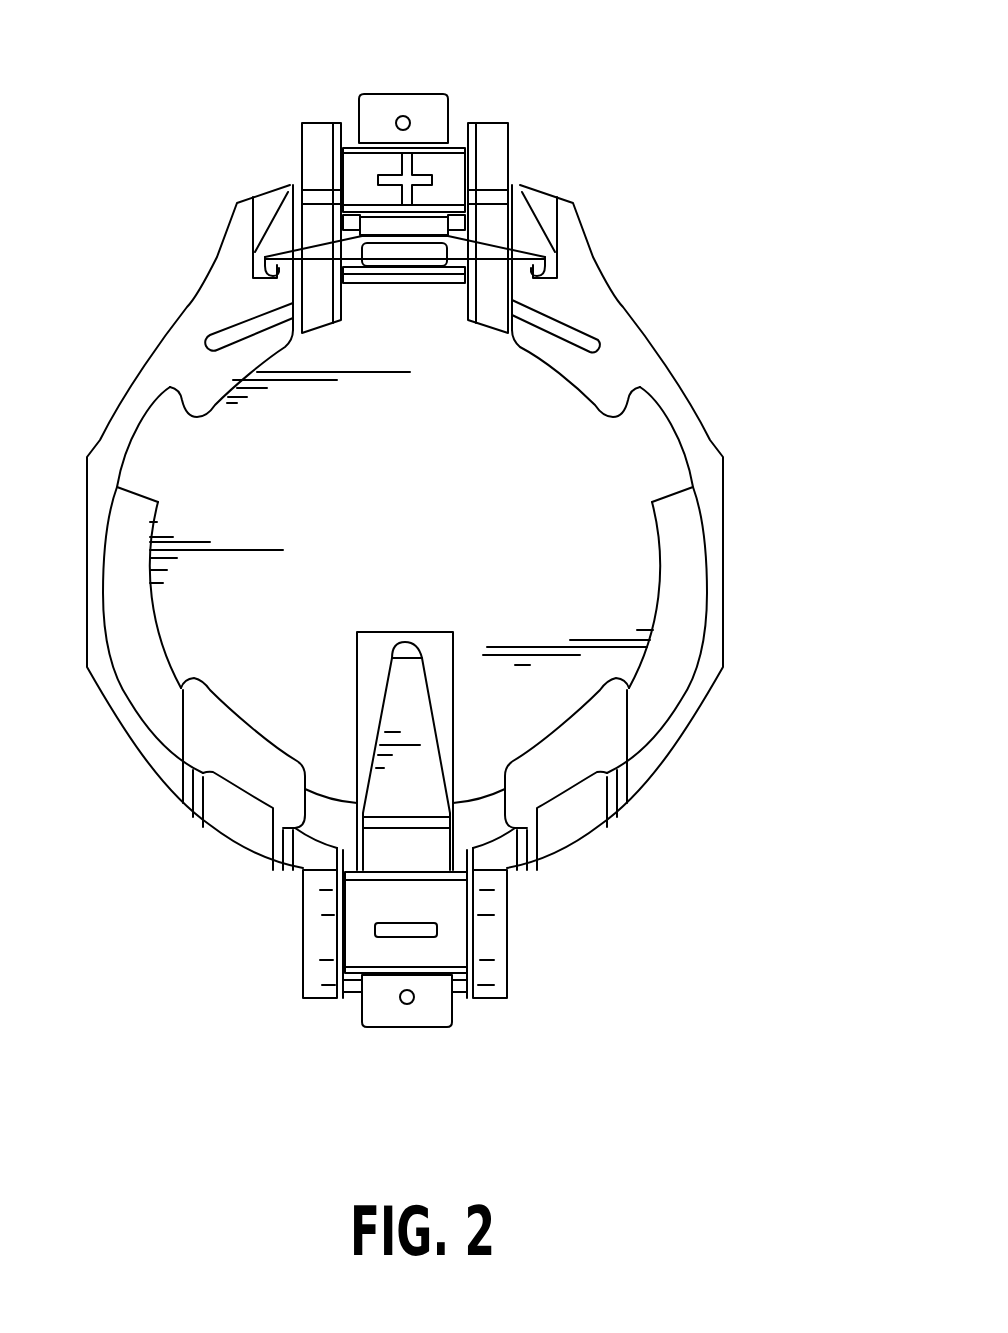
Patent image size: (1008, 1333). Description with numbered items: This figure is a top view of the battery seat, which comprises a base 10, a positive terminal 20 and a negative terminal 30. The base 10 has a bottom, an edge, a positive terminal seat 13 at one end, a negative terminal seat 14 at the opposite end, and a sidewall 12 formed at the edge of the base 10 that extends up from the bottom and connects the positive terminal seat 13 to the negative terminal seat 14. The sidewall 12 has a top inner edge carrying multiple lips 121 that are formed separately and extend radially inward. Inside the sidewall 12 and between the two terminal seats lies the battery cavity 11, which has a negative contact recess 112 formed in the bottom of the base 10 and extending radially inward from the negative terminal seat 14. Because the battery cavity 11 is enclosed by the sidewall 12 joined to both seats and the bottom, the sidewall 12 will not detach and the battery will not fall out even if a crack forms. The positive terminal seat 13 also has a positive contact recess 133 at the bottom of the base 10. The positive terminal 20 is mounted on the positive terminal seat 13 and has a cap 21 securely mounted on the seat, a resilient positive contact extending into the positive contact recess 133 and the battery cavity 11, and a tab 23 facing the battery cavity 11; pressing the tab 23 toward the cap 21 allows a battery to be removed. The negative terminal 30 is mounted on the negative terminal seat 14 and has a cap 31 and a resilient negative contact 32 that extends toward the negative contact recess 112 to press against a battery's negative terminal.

The base 10 is at (478, 552).
The battery cavity 11 is at (597, 465).
The sidewall 12 is at (452, 527).
The negative contact recess 112 is at (433, 643).
The lips 121 is at (567, 322).
The positive terminal seat 13 is at (495, 140).
The positive contact recess 133 is at (405, 266).
The negative terminal seat 14 is at (495, 957).
The positive terminal 20 is at (410, 189).
The cap 21 is at (360, 168).
The tab 23 is at (405, 307).
The negative terminal 30 is at (422, 873).
The cap 31 is at (375, 952).
The negative contact 32 is at (410, 720).